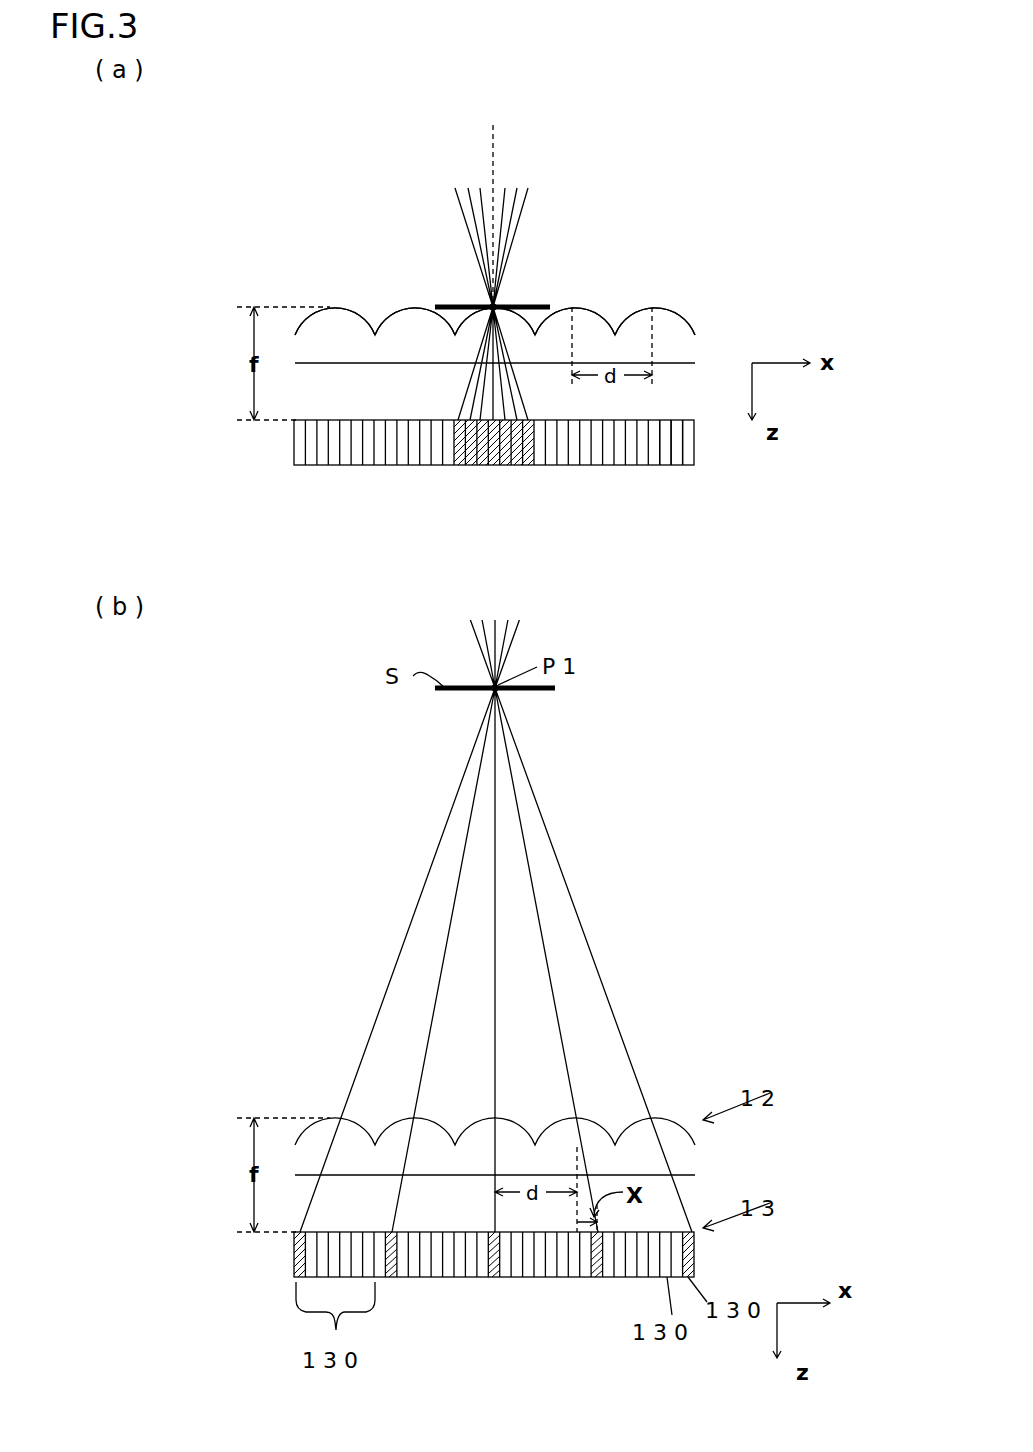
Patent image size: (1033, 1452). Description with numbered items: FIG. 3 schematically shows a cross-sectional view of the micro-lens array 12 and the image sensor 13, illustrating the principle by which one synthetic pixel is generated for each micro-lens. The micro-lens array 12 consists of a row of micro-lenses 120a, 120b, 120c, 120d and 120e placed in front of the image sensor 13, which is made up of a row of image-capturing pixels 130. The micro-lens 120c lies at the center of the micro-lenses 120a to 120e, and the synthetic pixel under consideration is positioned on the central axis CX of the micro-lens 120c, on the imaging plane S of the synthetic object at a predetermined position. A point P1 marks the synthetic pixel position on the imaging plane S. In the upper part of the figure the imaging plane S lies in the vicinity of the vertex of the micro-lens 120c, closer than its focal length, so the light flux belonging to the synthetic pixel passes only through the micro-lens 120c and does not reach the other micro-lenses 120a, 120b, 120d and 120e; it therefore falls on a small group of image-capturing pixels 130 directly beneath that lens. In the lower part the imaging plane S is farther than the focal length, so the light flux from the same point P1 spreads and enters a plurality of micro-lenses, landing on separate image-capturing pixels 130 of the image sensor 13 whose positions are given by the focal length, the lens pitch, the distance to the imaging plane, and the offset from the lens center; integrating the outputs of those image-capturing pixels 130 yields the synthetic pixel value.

The micro-lens array 12 is at (770, 283).
The image sensor 13 is at (681, 412).
The image-capturing pixel 130 is at (687, 453).
The micro-lens 120a is at (345, 318).
The micro-lens 120b is at (413, 337).
The micro-lens 120c is at (522, 353).
The micro-lens 120d is at (590, 318).
The micro-lens 120e is at (637, 318).
The imaging plane S is at (445, 307).
The point on subject P1 is at (497, 300).
The central axis CX is at (496, 138).